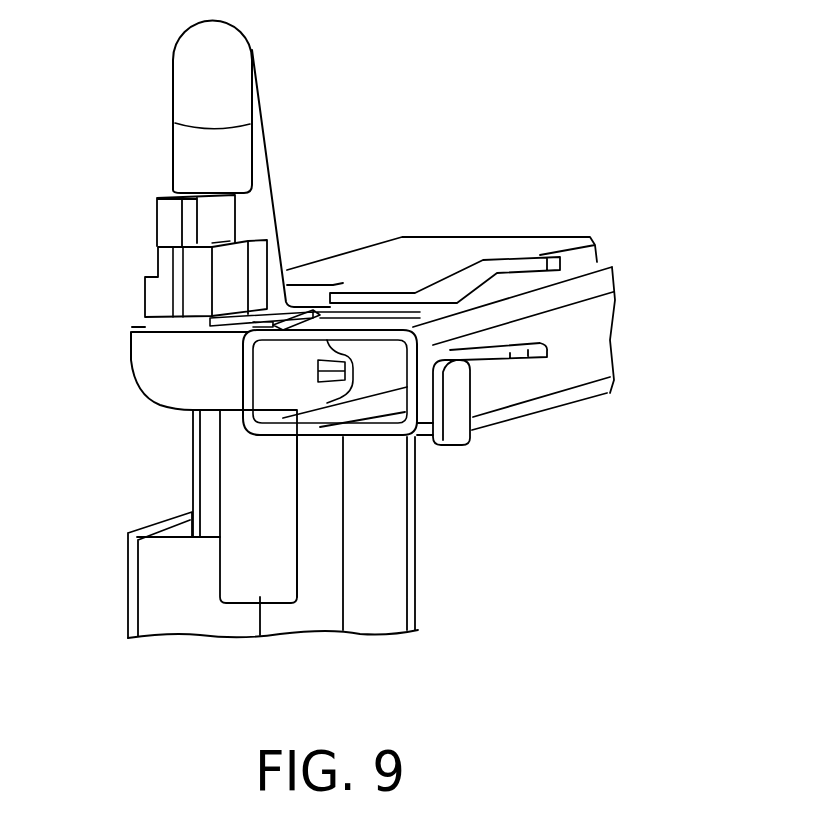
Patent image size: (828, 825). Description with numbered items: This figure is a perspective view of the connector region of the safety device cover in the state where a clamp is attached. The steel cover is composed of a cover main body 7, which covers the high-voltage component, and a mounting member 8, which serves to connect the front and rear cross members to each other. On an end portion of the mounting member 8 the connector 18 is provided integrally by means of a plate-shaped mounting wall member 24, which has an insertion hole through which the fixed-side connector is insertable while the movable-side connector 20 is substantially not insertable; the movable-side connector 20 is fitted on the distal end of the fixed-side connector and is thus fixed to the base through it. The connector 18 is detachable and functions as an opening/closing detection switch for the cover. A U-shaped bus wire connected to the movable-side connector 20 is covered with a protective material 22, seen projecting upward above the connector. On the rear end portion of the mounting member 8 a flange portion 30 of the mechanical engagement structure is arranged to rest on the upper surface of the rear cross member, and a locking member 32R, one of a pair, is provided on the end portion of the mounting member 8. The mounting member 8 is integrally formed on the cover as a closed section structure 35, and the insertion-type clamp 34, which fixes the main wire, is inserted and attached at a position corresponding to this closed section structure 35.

The cover main body 7 is at (418, 248).
The mounting member 8 is at (612, 280).
The connector 18 is at (128, 227).
The movable-side connector 20 is at (197, 272).
The protective material 22 is at (190, 77).
The plate-shaped mounting wall member 24 is at (143, 323).
The flange portion 30 is at (500, 363).
The locking member 32R is at (523, 263).
The insertion-type clamp 34 is at (343, 385).
The closed section structure 35 is at (277, 435).